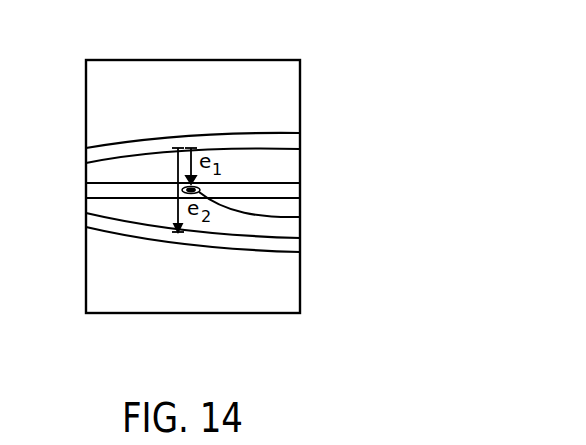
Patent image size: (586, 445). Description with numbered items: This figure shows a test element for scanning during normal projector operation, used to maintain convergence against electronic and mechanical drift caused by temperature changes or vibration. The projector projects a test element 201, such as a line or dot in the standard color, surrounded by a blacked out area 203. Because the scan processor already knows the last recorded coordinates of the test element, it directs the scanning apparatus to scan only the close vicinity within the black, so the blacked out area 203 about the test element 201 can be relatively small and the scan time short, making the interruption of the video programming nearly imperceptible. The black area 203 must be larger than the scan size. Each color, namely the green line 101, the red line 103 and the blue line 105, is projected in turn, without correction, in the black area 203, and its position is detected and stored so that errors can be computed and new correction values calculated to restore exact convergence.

The blacked out area 203 is at (278, 102).
The green horizontal line 101 is at (282, 141).
The red horizontal line 103 is at (287, 191).
The test element 201 is at (272, 216).
The blue horizontal line 105 is at (284, 246).